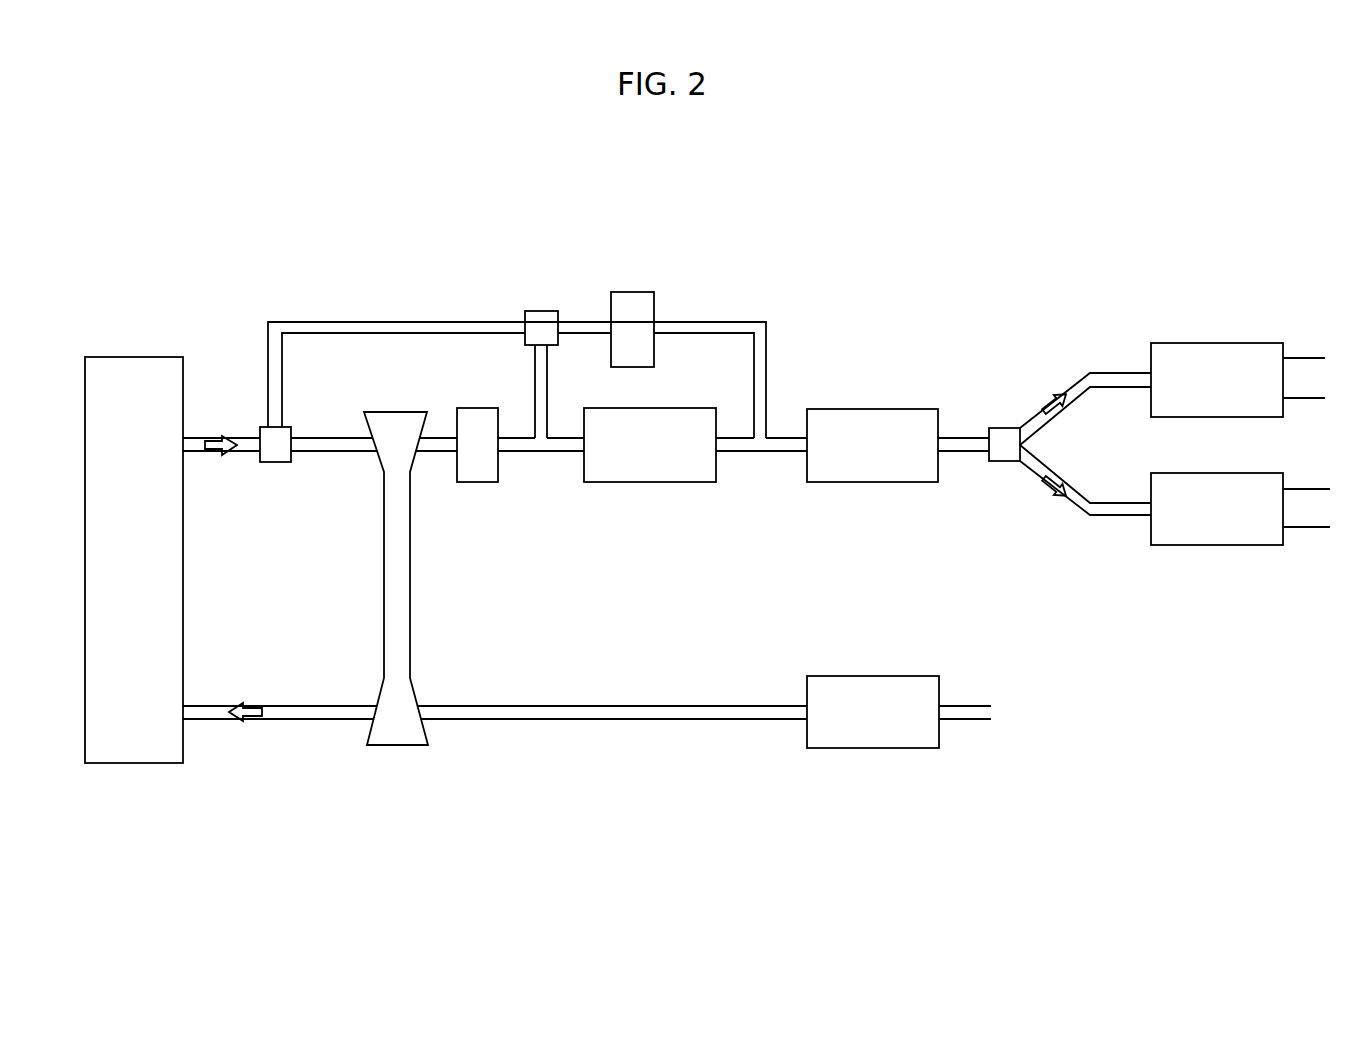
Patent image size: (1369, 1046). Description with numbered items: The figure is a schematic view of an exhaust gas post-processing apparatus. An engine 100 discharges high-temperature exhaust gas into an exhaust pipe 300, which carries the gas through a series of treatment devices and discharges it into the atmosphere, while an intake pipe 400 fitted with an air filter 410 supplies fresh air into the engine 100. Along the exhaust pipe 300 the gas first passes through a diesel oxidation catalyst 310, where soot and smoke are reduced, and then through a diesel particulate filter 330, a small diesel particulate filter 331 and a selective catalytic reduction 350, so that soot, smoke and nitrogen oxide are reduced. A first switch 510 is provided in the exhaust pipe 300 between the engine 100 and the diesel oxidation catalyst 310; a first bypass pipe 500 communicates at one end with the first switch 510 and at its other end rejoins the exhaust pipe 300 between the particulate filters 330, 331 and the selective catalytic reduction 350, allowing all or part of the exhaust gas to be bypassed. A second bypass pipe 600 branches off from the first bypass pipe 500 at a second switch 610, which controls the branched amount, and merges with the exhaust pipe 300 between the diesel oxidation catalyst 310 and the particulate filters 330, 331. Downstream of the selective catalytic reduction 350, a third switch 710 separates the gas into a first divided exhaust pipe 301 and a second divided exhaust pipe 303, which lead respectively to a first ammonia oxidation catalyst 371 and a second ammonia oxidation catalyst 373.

The engine 100 is at (132, 752).
The exhaust pipe 300 is at (231, 452).
The first divided exhaust pipe 301 is at (1106, 370).
The second divided exhaust pipe 303 is at (1102, 518).
The diesel oxidation catalyst 310 is at (396, 449).
The diesel particulate filter 330 is at (647, 467).
The small diesel particulate filter 331 is at (633, 302).
The selective catalytic reduction 350 is at (875, 470).
The first ammonia oxidation catalyst 371 is at (1205, 358).
The second ammonia oxidation catalyst 373 is at (1212, 525).
The intake pipe 400 is at (250, 706).
The air filter 410 is at (400, 740).
The first bypass pipe 500 is at (373, 328).
The first switch 510 is at (270, 437).
The second bypass pipe 600 is at (536, 385).
The second switch 610 is at (541, 330).
The third switch 710 is at (1000, 437).